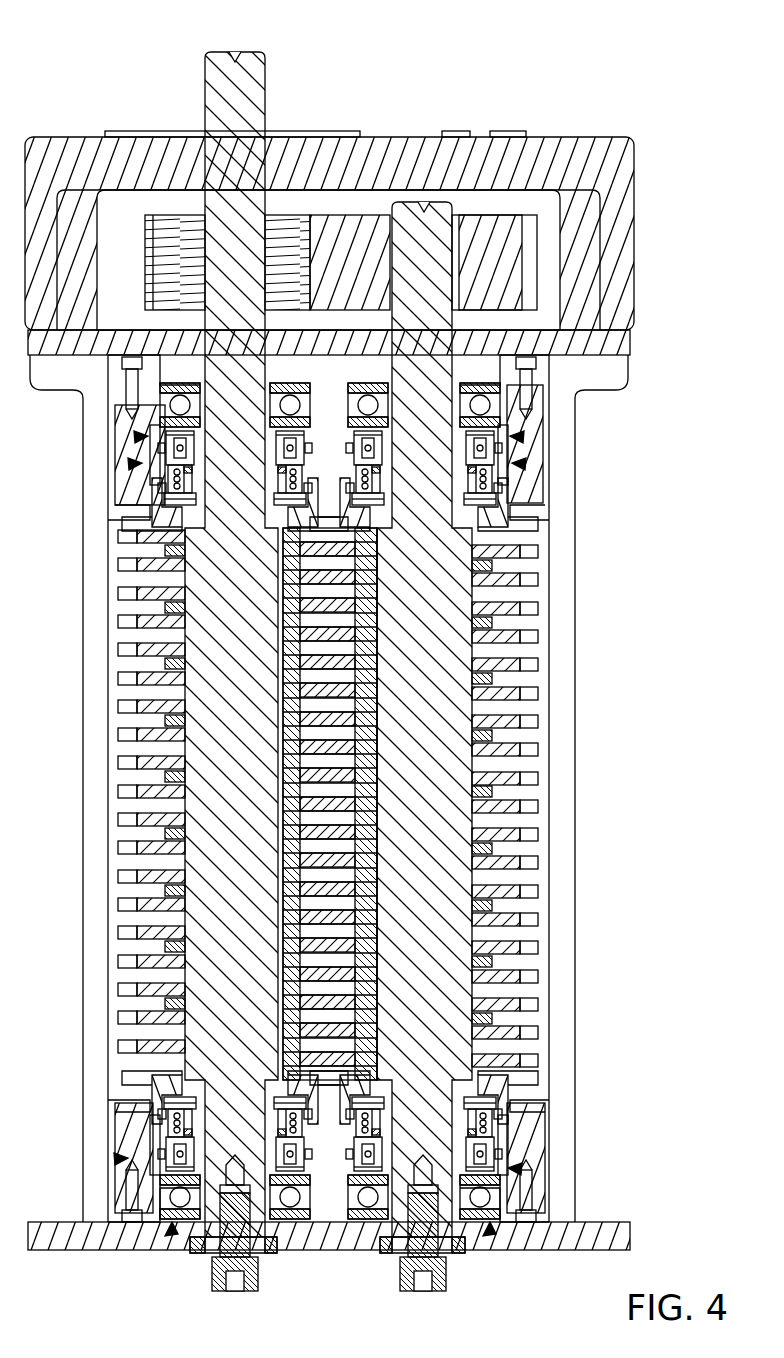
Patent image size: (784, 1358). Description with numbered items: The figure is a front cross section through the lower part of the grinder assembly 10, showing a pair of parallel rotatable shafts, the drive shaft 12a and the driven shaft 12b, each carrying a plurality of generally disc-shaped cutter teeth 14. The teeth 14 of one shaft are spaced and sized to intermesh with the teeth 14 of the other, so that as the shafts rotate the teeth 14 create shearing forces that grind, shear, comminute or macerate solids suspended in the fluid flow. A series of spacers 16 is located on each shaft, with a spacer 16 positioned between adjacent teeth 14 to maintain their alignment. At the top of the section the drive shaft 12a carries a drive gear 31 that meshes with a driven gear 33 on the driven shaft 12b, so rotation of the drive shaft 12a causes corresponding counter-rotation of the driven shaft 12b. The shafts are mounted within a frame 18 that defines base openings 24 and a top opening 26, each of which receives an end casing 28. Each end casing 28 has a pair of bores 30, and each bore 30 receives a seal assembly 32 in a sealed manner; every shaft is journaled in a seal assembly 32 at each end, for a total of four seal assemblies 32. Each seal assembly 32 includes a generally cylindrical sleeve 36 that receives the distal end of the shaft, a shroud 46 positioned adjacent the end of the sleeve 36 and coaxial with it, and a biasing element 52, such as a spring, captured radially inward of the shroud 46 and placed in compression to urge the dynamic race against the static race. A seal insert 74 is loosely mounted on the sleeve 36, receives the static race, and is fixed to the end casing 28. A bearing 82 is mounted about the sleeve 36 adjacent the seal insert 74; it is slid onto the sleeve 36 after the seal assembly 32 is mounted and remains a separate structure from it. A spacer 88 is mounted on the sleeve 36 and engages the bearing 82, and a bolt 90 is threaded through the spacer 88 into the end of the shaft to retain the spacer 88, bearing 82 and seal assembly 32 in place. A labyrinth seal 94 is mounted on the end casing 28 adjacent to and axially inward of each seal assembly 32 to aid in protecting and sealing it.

The grinder assembly 10 is at (598, 84).
The drive shaft 12a is at (214, 595).
The driven shaft 12b is at (440, 596).
The cutter teeth 14 is at (532, 548).
The spacers 16 is at (470, 758).
The frame 18 is at (572, 762).
The base openings 24 is at (116, 1158).
The top opening 26 is at (136, 437).
The end casing 28 is at (522, 437).
The bores 30 is at (130, 463).
The drive gear 31 is at (165, 265).
The driven gear 33 is at (515, 258).
The seal assembly 32 is at (144, 432).
The sleeve 36 is at (192, 446).
The shroud 46 is at (192, 506).
The biasing element 52 is at (190, 483).
The seal insert 74 is at (166, 445).
The bearing 82 is at (176, 408).
The spacer 88 is at (200, 1256).
The bolt 90 is at (261, 1270).
The labyrinth seal 94 is at (189, 528).